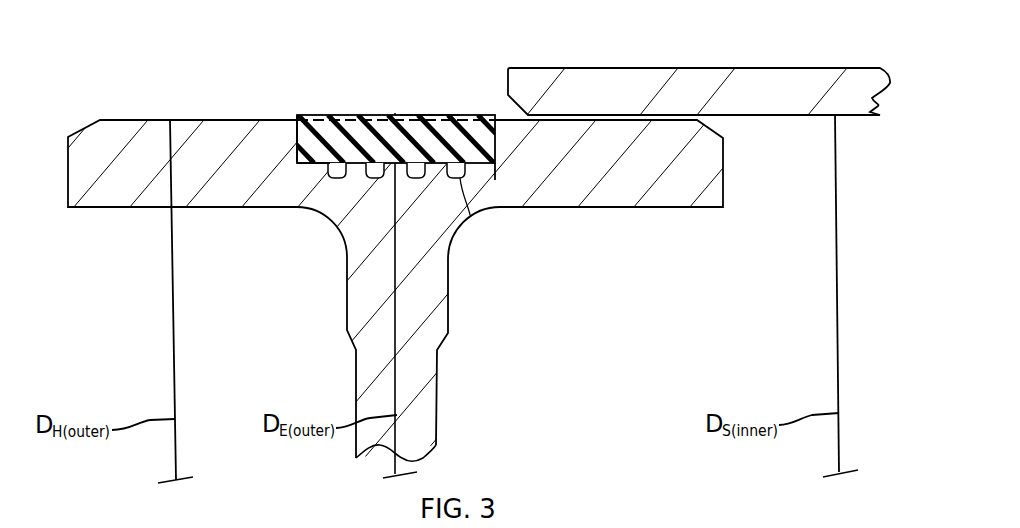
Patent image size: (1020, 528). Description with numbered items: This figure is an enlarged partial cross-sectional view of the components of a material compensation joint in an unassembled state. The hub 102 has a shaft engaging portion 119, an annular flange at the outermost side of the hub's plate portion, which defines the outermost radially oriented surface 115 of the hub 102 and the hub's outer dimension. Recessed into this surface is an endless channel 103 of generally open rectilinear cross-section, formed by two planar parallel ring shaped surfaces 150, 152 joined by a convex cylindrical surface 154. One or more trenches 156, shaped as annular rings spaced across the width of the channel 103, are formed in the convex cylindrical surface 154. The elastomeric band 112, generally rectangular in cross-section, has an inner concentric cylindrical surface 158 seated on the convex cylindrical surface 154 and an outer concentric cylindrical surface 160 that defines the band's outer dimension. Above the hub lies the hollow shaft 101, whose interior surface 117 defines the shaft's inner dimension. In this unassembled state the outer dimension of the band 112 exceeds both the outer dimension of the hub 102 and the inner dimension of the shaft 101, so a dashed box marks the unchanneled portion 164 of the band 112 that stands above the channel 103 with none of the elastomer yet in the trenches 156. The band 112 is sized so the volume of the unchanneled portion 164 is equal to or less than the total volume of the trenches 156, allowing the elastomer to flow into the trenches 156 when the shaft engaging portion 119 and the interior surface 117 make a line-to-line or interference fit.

The hollow shaft 101 is at (603, 78).
The hub 102 is at (430, 358).
The channel 103 is at (507, 164).
The elastomeric band 112 is at (362, 119).
The outermost radially oriented surface 115 is at (193, 118).
The interior surface 117 is at (778, 115).
The shaft engaging portion 119 is at (138, 130).
The planar parallel ring shaped surface 150 is at (311, 118).
The planar parallel ring shaped surface 152 is at (482, 118).
The convex cylindrical surface 154 is at (307, 162).
The trenches 156 is at (415, 180).
The inner concentric cylindrical surface 158 is at (338, 168).
The outer concentric cylindrical surface 160 is at (428, 117).
The unchanneled portion 164 is at (297, 118).